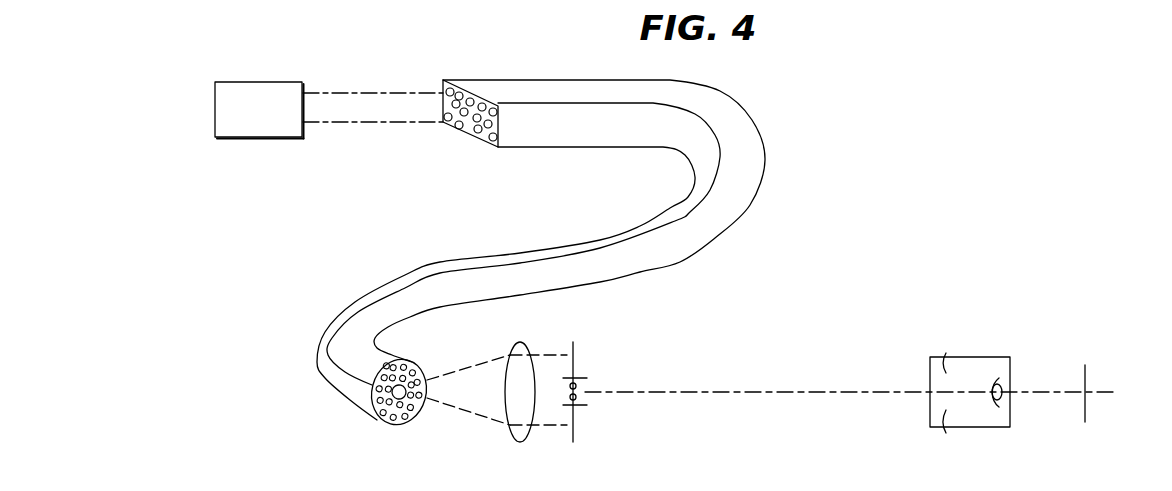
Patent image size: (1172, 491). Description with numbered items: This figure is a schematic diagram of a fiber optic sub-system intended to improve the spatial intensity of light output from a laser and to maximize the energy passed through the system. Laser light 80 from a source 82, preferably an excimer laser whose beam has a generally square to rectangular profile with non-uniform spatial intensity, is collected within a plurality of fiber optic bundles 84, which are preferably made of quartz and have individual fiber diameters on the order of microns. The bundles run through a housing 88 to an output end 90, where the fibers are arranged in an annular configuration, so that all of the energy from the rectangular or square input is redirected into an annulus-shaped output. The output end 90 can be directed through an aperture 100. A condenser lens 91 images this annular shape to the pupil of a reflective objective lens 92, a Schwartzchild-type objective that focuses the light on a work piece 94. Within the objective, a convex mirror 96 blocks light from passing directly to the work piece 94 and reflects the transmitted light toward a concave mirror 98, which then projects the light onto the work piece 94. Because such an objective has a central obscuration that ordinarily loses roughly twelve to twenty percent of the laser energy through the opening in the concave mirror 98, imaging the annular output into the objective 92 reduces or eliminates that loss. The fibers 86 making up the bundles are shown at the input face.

The laser light 80 is at (362, 122).
The source 82 is at (245, 138).
The fiber optic bundles 84 is at (458, 125).
The optical fibers 86 is at (477, 98).
The housing 88 is at (687, 258).
The output end 90 is at (414, 367).
The condenser lens 91 is at (527, 437).
The reflective objective lens 92 is at (978, 357).
The work piece 94 is at (1085, 368).
The convex mirror 96 is at (1003, 385).
The concave mirror 98 is at (942, 355).
The aperture 100 is at (575, 352).